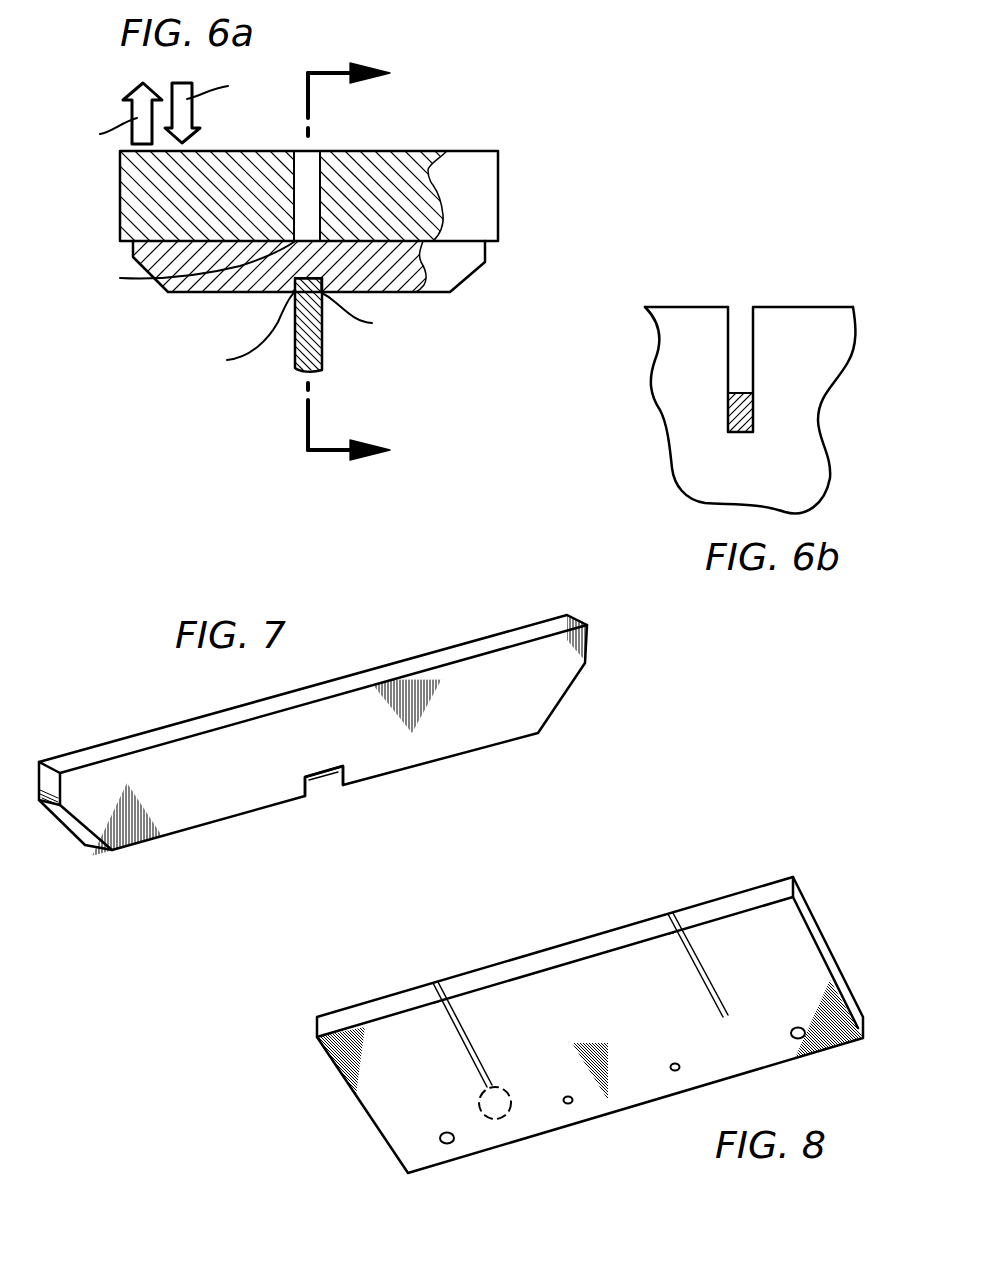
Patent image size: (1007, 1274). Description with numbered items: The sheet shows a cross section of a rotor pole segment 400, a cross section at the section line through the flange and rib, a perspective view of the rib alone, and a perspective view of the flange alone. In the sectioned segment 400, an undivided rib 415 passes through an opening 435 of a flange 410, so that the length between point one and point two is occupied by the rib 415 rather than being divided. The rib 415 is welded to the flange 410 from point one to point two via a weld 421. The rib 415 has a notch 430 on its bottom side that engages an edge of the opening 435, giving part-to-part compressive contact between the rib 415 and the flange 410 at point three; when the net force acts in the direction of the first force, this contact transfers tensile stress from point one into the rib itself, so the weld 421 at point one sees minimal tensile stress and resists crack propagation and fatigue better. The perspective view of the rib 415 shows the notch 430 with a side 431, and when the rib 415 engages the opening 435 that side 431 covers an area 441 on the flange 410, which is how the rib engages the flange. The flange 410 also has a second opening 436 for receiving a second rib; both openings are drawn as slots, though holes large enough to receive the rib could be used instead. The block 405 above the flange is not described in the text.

In FIG. 6A, the segment 400 is at (478, 104).
In FIG. 6B, the segment 400 is at (805, 272).
In FIG. 6A, the upper block 405 is at (482, 197).
In FIG. 6A, the flange 410 is at (318, 353).
In FIG. 6B, the flange 410 is at (670, 362).
In FIG. 8, the flange 410 is at (758, 860).
In FIG. 6A, the rib 415 is at (457, 265).
In FIG. 6B, the rib 415 is at (730, 412).
In FIG. 7, the rib 415 is at (146, 706).
In FIG. 6A, the weld 421 is at (293, 267).
In FIG. 6A, the notch 430 is at (309, 288).
In FIG. 7, the notch 430 is at (315, 790).
In FIG. 7, the side 431 is at (330, 778).
In FIG. 6B, the opening 435 is at (741, 313).
In FIG. 8, the opening 435 is at (434, 1000).
In FIG. 8, the second opening 436 is at (668, 925).
In FIG. 8, the area 441 is at (483, 1113).